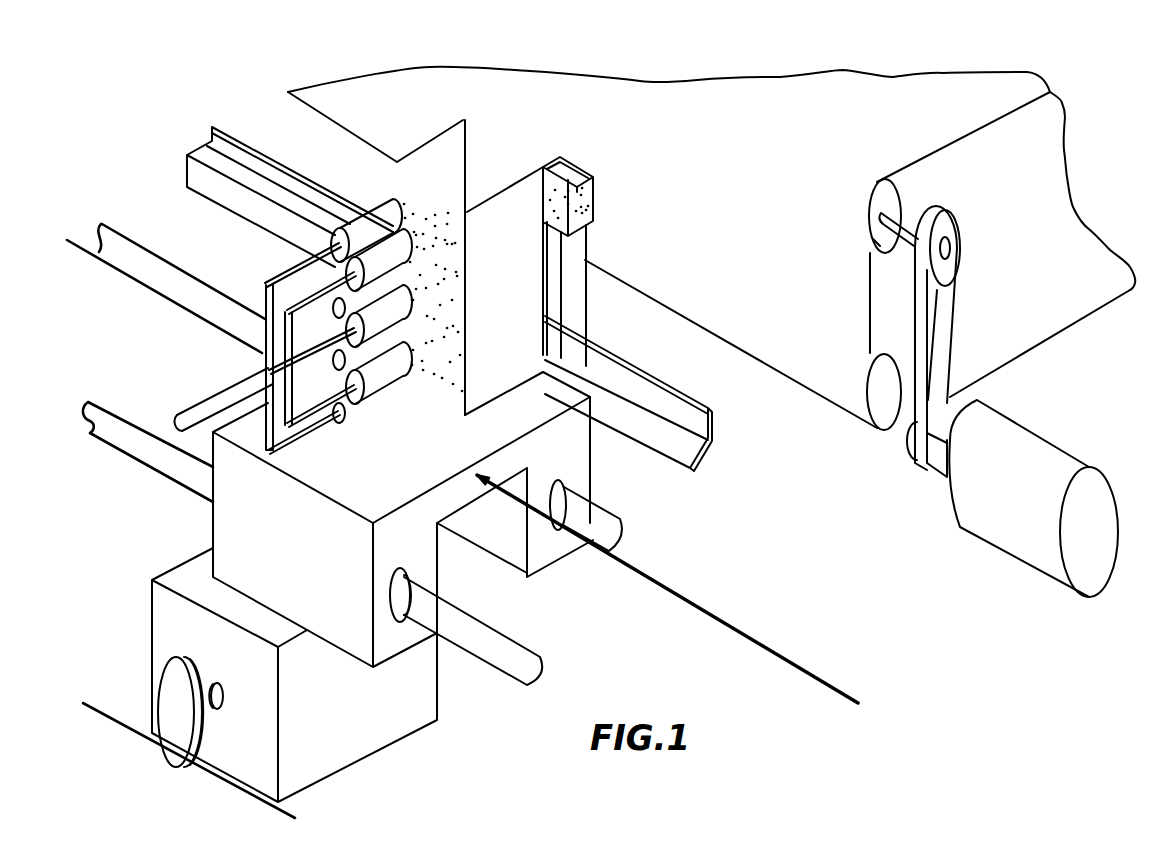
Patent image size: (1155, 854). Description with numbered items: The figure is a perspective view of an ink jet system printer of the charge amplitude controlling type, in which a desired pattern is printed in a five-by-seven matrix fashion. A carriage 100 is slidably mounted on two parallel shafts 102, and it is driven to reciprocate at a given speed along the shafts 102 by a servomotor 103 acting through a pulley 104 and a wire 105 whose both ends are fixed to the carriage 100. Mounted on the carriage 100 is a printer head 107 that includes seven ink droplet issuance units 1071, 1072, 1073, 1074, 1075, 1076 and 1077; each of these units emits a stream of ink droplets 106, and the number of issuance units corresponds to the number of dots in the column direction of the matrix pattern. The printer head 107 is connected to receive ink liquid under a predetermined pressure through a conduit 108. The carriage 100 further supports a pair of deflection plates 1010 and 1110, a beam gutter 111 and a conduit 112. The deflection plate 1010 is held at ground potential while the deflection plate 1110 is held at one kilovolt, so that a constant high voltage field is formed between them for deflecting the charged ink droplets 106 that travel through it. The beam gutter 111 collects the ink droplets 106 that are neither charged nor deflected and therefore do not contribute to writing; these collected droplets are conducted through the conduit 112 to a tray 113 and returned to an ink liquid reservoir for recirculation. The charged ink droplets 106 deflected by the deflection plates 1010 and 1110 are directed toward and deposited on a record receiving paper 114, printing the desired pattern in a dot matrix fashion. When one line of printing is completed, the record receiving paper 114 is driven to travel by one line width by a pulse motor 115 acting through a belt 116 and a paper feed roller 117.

The carriage 100 is at (232, 528).
The shafts 102 is at (613, 518).
The servomotor 103 is at (160, 605).
The pulley 104 is at (175, 673).
The wire 105 is at (88, 256).
The ink droplets 106 is at (385, 203).
The printer head 107 is at (321, 240).
The conduit 108 is at (193, 412).
The deflection plate 1010 is at (385, 205).
The ink droplet issuance unit 1071 is at (372, 217).
The ink droplet issuance unit 1072 is at (292, 287).
The ink droplet issuance unit 1073 is at (272, 346).
The ink droplet issuance unit 1074 is at (498, 378).
The ink droplet issuance unit 1075 is at (305, 415).
The ink droplet issuance unit 1076 is at (398, 375).
The ink droplet issuance unit 1077 is at (377, 407).
The deflection plate 1110 is at (491, 392).
The beam gutter 111 is at (587, 170).
The conduit 112 is at (580, 240).
The tray 113 is at (608, 360).
The record receiving paper 114 is at (765, 318).
The pulse motor 115 is at (1003, 427).
The belt 116 is at (913, 400).
The paper feed roller 117 is at (870, 250).